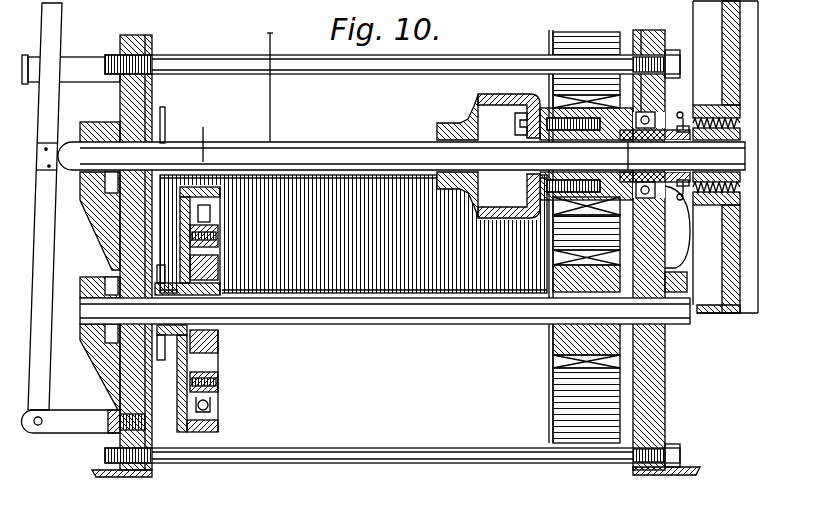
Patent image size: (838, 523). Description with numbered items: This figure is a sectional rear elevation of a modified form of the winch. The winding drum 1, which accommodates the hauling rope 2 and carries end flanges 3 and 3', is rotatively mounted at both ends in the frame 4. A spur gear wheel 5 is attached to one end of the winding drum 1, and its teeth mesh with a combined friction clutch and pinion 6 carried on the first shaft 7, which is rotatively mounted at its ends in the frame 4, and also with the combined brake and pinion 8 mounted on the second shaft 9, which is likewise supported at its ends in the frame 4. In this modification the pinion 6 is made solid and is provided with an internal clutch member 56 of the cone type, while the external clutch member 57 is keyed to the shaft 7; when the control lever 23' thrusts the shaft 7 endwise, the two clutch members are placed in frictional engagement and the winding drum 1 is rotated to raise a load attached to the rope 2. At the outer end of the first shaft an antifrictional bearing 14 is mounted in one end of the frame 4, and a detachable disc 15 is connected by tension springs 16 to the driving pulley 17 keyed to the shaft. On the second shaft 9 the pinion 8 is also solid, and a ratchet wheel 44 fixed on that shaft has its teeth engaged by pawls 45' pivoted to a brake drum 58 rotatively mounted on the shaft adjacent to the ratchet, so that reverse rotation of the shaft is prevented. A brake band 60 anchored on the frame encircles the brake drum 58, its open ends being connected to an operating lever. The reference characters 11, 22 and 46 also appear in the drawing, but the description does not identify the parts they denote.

The winding drum 1 is at (350, 287).
The hauling rope 2 is at (273, 106).
The end flange 3 is at (574, 138).
The end flange 3' is at (173, 111).
The frame 4 is at (142, 41).
The spur gear wheel 5 is at (590, 32).
The combined friction clutch and pinion 6 is at (558, 68).
The first shaft 7 is at (328, 142).
The combined brake and pinion 8 is at (552, 360).
The second shaft 9 is at (320, 322).
The axis line 11 is at (203, 125).
The antifrictional bearing 14 is at (663, 207).
The detachable disc 15 is at (686, 116).
The tension springs 16 is at (742, 124).
The driving pulley 17 is at (750, 61).
The lever arm 22 is at (84, 422).
The control lever 23' is at (67, 206).
The ratchet wheel 44 is at (220, 346).
The pawls 45' is at (229, 394).
The tie rod 46 is at (390, 74).
The internal clutch member 56 is at (492, 94).
The external clutch member 57 is at (470, 116).
The brake drum 58 is at (220, 360).
The brake band 60 is at (212, 430).